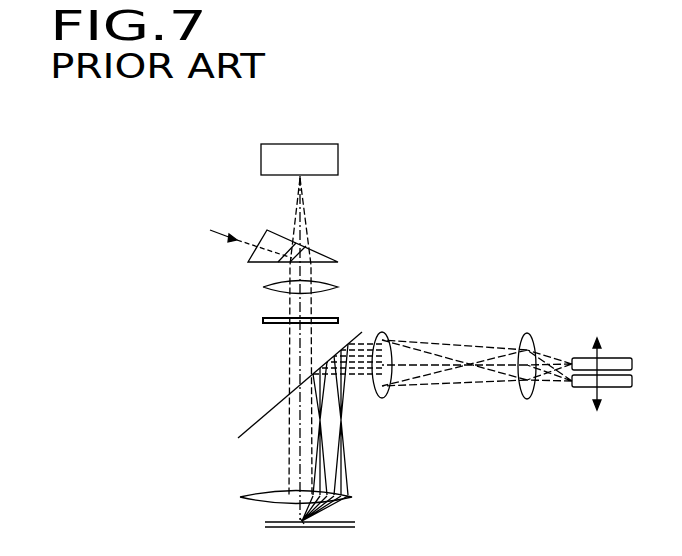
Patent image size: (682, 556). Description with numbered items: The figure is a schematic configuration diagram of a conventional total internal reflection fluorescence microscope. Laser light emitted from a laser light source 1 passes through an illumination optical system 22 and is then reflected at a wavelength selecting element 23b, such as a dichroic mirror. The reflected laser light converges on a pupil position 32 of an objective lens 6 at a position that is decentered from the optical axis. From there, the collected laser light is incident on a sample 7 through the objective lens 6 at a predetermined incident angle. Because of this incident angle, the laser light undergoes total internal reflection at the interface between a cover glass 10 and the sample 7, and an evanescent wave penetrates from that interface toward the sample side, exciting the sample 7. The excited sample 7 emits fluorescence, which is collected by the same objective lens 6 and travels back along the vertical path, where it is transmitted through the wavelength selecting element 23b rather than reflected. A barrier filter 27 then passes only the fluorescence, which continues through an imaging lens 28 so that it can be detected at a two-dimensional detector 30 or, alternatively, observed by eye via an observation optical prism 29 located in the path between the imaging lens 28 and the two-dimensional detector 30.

The laser light source 1 is at (620, 358).
The illumination optical system 22 is at (372, 327).
The wavelength selecting element 23b is at (270, 410).
The pupil position 32 is at (349, 425).
The objective lens 6 is at (240, 497).
The sample 7 is at (278, 524).
The cover glass 10 is at (340, 522).
The barrier filter 27 is at (263, 320).
The imaging lens 28 is at (263, 287).
The observation optical prism 29 is at (252, 258).
The two-dimensional detector 30 is at (261, 156).